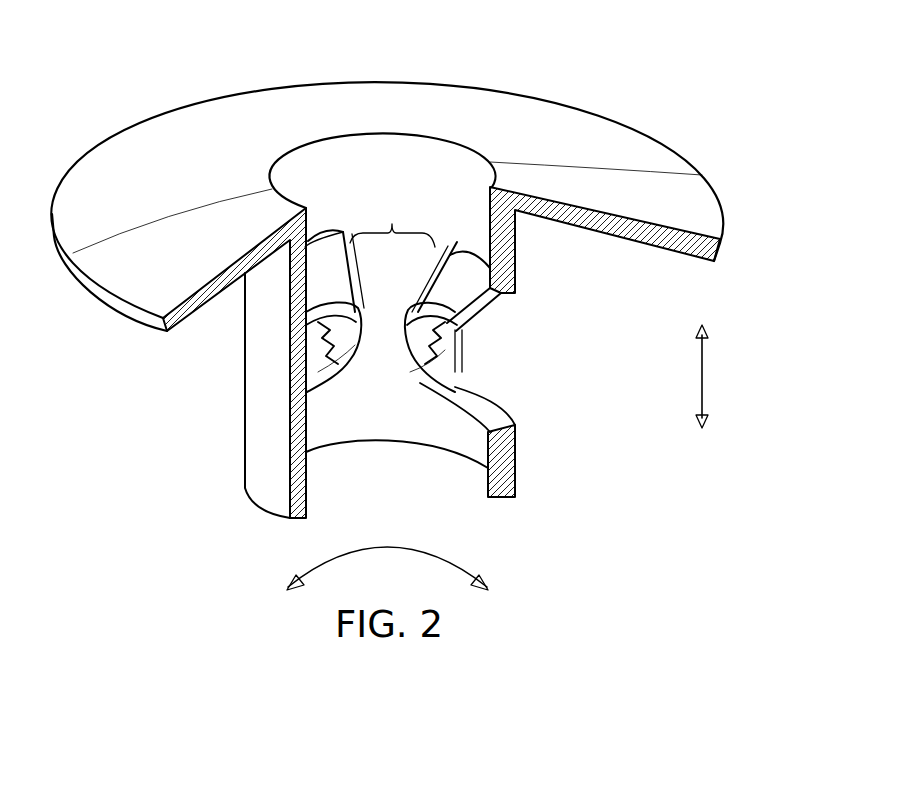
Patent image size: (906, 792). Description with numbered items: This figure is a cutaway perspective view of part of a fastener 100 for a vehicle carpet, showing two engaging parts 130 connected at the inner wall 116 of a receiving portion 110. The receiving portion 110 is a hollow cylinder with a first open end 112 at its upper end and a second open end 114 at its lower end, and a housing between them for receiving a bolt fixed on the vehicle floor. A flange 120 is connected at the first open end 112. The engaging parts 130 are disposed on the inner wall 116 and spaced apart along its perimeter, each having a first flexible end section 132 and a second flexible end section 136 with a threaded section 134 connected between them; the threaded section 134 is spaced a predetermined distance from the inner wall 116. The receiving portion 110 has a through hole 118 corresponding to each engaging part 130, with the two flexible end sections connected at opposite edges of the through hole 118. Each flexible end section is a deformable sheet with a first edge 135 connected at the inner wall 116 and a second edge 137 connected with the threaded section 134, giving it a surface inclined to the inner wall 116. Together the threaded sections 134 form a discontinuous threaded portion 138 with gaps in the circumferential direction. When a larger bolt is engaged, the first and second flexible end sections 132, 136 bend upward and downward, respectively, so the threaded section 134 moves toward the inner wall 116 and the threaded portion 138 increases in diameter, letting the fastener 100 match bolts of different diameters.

The fastener 100 is at (666, 47).
The receiving portion 110 is at (257, 437).
The first open end 112 is at (368, 128).
The second open end 114 is at (398, 444).
The inner wall 116 is at (442, 157).
The through hole 118 is at (497, 322).
The flange 120 is at (122, 152).
The engaging part 130 is at (342, 237).
The first flexible end section 132 is at (313, 256).
The threaded section 134 is at (360, 320).
The first edge 135 is at (484, 249).
The second flexible end section 136 is at (322, 385).
The second edge 137 is at (467, 326).
The threaded portion 138 is at (392, 222).